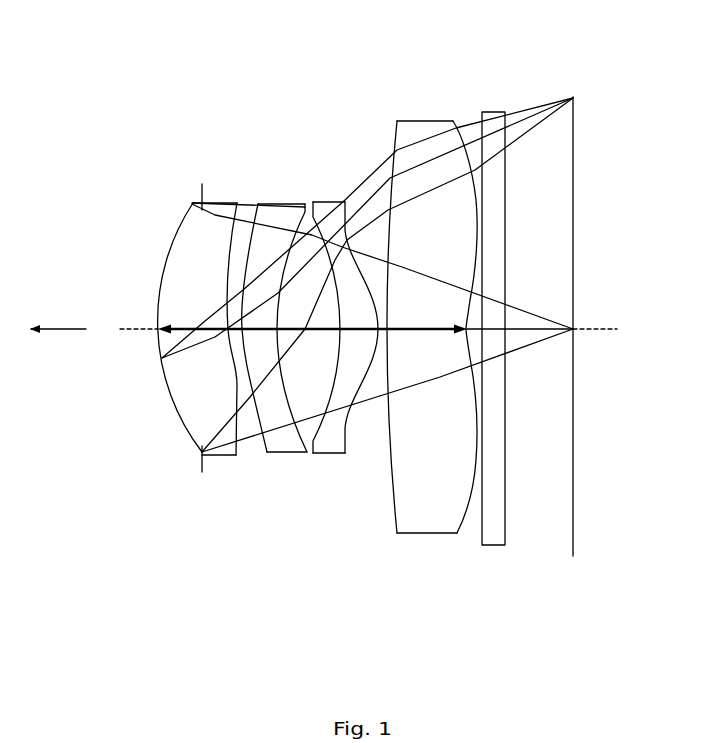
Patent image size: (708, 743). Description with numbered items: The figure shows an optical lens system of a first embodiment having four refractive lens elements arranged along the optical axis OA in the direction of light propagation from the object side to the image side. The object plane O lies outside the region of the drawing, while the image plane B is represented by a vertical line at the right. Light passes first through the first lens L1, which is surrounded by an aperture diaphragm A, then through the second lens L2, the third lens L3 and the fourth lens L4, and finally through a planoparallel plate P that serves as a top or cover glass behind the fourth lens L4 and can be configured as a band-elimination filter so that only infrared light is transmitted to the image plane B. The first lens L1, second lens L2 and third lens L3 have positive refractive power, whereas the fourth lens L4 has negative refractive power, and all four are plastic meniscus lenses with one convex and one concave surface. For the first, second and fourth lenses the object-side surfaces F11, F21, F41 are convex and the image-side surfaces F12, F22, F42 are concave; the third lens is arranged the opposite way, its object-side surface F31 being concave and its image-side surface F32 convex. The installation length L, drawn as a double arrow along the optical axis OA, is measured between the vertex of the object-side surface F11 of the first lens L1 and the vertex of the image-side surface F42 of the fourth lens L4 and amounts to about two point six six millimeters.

The aperture diaphragm A is at (200, 204).
The first lens L1 is at (184, 297).
The second lens L2 is at (278, 312).
The third lens L3 is at (340, 292).
The fourth lens L4 is at (409, 328).
The surface of the first lens at the object side F11 is at (179, 413).
The surface of the first lens at the image side F12 is at (244, 256).
The surface of the second lens at the object side F21 is at (258, 421).
The surface of the second lens at the image side F22 is at (296, 400).
The surface of the third lens at the object side F31 is at (336, 333).
The surface of the third lens at the image side F32 is at (353, 434).
The surface of the fourth lens at the object side F41 is at (394, 498).
The surface of the fourth lens at the image side F42 is at (467, 528).
The planoparallel plate P is at (494, 137).
The image plane B is at (573, 208).
The optical axis OA is at (589, 331).
The object plane O is at (67, 330).
The installation length L is at (293, 327).